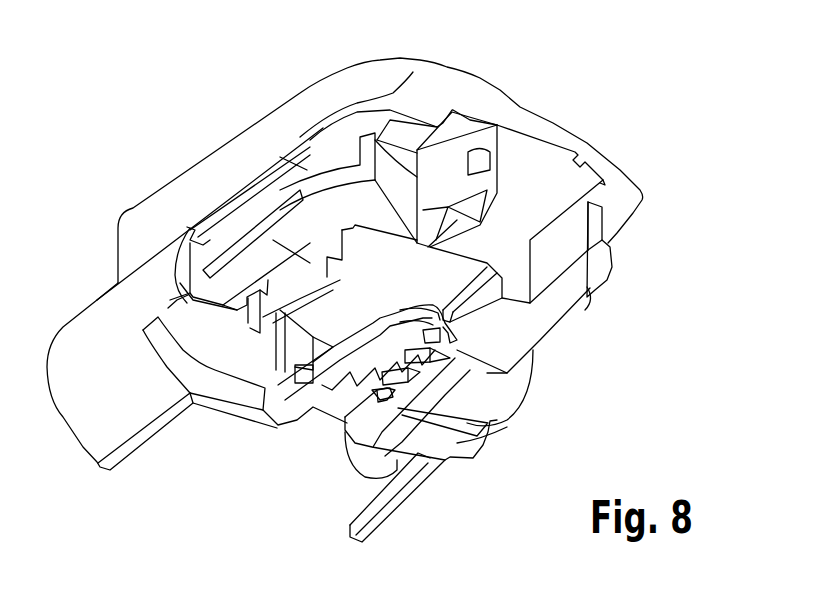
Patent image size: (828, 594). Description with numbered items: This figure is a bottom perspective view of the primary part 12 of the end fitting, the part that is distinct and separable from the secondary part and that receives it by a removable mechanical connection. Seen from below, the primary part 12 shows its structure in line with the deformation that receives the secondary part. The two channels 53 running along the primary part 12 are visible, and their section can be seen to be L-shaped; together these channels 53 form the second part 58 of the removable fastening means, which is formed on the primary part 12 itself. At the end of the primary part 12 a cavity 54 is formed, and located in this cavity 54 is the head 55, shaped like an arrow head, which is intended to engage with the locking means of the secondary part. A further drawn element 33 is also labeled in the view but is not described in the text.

The primary part 12 is at (647, 132).
The flexible toothed strip 33 is at (443, 382).
The channels 53 is at (283, 247).
The cavity 54 is at (527, 180).
The head 55 is at (442, 167).
The second part of the fastening means 58 is at (228, 233).